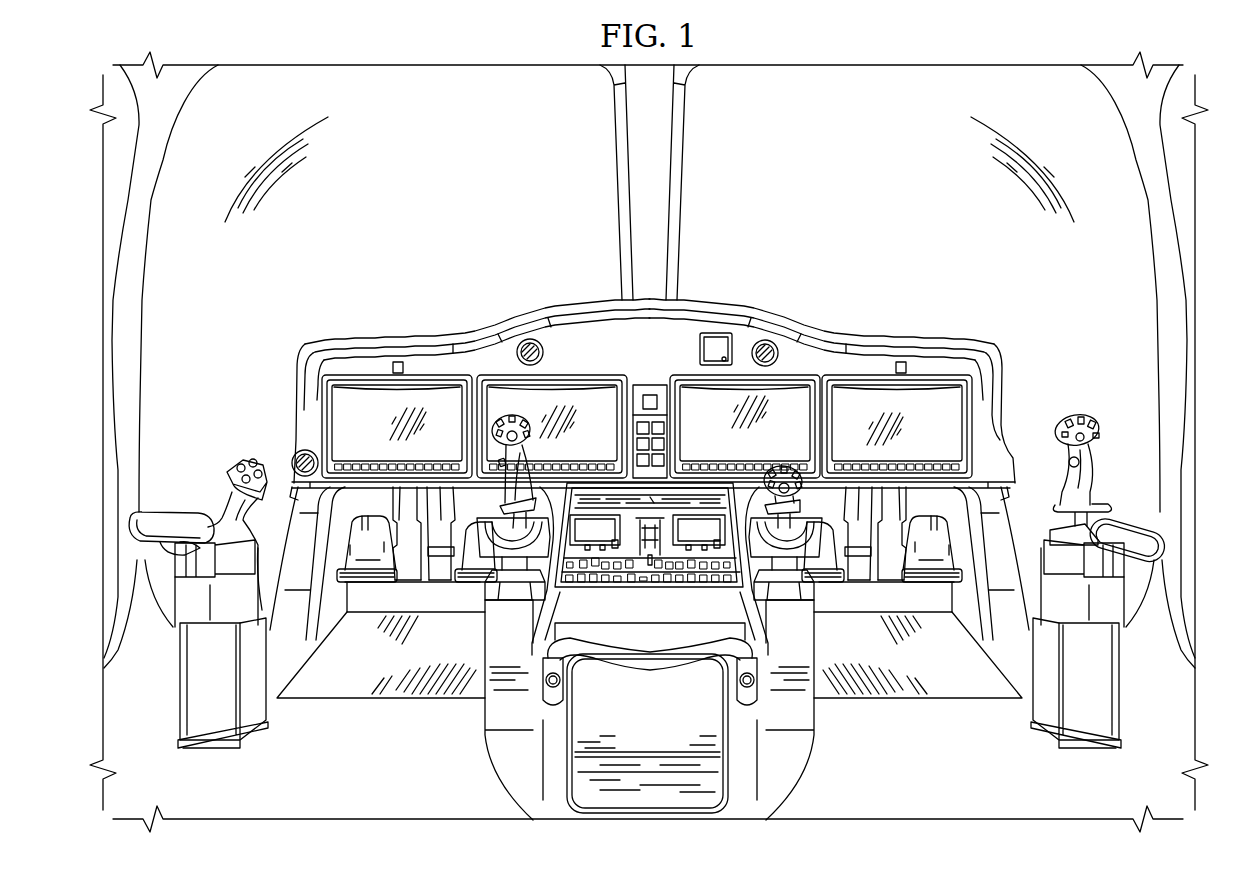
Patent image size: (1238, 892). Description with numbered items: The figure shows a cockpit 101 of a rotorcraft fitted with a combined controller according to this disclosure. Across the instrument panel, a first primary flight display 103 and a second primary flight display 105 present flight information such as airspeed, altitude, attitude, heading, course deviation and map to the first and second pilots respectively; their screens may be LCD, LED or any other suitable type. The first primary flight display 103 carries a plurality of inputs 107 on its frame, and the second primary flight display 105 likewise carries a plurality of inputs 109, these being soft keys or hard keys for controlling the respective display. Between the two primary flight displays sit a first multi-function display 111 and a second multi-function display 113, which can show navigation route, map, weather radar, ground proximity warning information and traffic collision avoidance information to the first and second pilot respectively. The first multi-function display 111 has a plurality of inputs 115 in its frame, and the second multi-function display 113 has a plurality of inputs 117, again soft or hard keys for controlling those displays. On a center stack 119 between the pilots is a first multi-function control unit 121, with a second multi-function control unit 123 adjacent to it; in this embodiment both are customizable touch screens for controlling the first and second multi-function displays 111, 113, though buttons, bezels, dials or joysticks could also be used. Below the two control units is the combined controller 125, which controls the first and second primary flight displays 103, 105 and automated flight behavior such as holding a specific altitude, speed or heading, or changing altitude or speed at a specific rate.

The cockpit 101 is at (427, 170).
The first primary flight display 103 is at (368, 396).
The second primary flight display 105 is at (935, 396).
The inputs 107 is at (384, 467).
The inputs 109 is at (917, 467).
The first multi-function display 111 is at (584, 400).
The second multi-function display 113 is at (690, 400).
The inputs 115 is at (556, 467).
The inputs 117 is at (750, 467).
The center stack 119 is at (682, 619).
The first multi-function control unit 121 is at (585, 515).
The second multi-function control unit 123 is at (713, 515).
The combined controller 125 is at (650, 585).